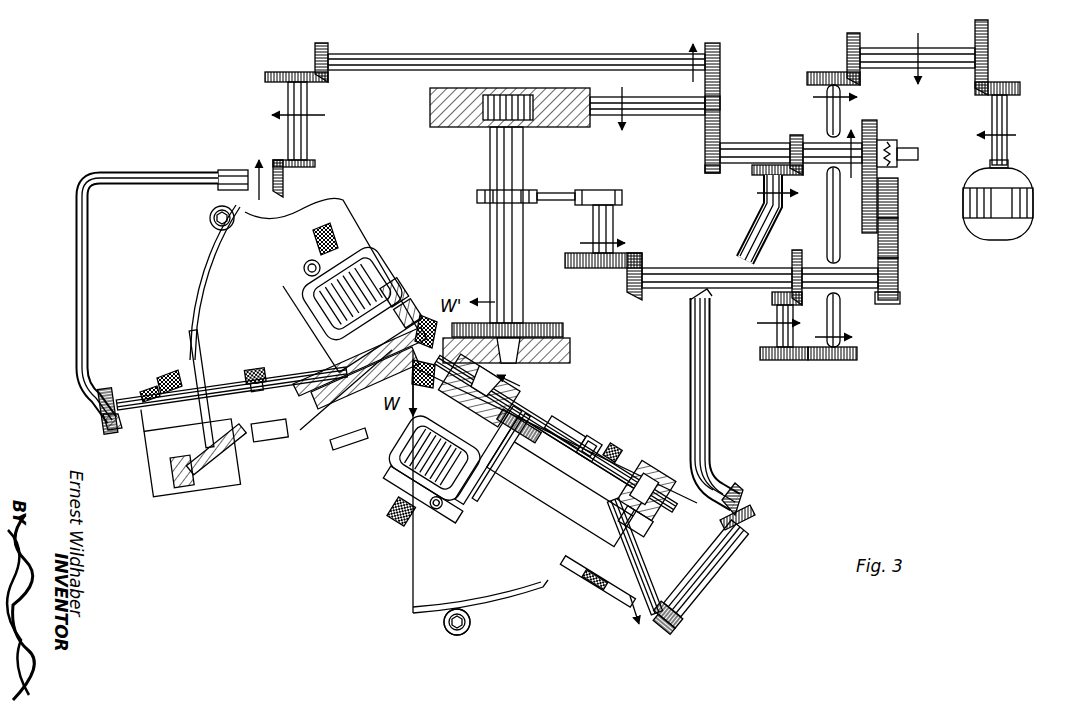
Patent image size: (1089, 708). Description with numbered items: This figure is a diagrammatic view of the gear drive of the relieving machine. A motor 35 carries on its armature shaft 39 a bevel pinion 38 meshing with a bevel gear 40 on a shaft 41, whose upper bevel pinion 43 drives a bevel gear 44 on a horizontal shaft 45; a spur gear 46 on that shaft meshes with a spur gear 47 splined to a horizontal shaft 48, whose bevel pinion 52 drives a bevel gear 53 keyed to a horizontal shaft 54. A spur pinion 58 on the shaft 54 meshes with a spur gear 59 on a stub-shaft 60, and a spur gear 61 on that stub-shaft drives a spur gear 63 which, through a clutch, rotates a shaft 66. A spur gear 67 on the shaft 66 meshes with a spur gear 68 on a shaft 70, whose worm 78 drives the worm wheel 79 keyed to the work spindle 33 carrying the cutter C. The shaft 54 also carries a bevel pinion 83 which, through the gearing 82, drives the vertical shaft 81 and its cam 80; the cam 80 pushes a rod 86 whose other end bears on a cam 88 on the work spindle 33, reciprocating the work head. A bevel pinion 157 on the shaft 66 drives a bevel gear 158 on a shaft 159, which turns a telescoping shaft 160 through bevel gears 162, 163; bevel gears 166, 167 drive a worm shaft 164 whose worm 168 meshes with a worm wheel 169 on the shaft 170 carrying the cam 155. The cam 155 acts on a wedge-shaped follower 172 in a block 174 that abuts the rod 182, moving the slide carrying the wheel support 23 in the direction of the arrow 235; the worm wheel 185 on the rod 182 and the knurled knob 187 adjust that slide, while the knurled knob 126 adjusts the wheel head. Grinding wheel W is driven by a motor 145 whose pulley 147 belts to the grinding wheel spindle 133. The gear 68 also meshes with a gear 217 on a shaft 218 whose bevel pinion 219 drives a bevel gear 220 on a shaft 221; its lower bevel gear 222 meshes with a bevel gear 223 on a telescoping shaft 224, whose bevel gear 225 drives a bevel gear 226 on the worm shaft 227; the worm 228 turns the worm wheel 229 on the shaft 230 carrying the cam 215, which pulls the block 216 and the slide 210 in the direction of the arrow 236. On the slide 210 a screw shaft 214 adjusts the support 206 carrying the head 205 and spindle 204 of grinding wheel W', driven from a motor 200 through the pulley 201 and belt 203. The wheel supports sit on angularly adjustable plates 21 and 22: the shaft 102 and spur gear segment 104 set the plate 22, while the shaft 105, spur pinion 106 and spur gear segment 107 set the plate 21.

The plate 21 is at (413, 570).
The plate 22 is at (350, 204).
The wheel support 23 is at (390, 476).
The work spindle 33 is at (490, 232).
The motor 35 is at (1033, 208).
The bevel pinion 38 is at (1012, 84).
The armature shaft 39 is at (1007, 120).
The bevel gear 40 is at (992, 32).
The shaft 41 is at (897, 52).
The bevel pinion 43 is at (847, 38).
The bevel gear 44 is at (808, 76).
The horizontal shaft 45 is at (827, 212).
The spur gear 46 is at (845, 360).
The spur gear 47 is at (782, 360).
The horizontal shaft 48 is at (777, 330).
The bevel pinion 52 is at (772, 300).
The bevel gear 53 is at (796, 256).
The horizontal shaft 54 is at (670, 268).
The spur pinion 58 is at (900, 304).
The spur gear 59 is at (898, 246).
The stub-shaft 60 is at (898, 222).
The spur gear 61 is at (898, 196).
The spur gear 63 is at (876, 132).
The shaft 66 is at (746, 143).
The spur gear 67 is at (705, 173).
The spur gear 68 is at (720, 105).
The shaft 70 is at (660, 114).
The worm 78 is at (495, 122).
The worm wheel 79 is at (430, 108).
The cam 80 is at (613, 191).
The vertical shaft 81 is at (613, 215).
The gearing 82 is at (575, 267).
The bevel pinion 83 is at (633, 296).
The rod 86 is at (548, 193).
The cam 88 is at (477, 196).
The shaft 102 is at (210, 219).
The spur gear segment 104 is at (195, 290).
The shaft 105 is at (446, 634).
The spur pinion 106 is at (470, 632).
The spur gear segment 107 is at (548, 592).
The knurled knob 126 is at (390, 514).
The grinding wheel spindle 133 is at (522, 388).
The motor 145 is at (438, 512).
The pulley 147 is at (478, 487).
The cam 155 is at (635, 470).
The bevel pinion 157 is at (805, 138).
The bevel gear 158 is at (754, 172).
The shaft 159 is at (711, 394).
The telescoping shaft 160 is at (706, 600).
The bevel gear 162 is at (748, 490).
The bevel gear 163 is at (752, 518).
The worm shaft 164 is at (646, 598).
The bevel gear 166 is at (682, 634).
The bevel gear 167 is at (655, 624).
The worm 168 is at (591, 592).
The worm wheel 169 is at (560, 564).
The shaft 170 is at (584, 532).
The wedge-shaped follower 172 is at (617, 458).
The block 174 is at (652, 528).
The bar or rod 182 is at (590, 415).
The worm wheel 185 is at (593, 436).
The knurled knob 187 is at (545, 520).
The motor 200 is at (369, 264).
The pulley 201 is at (304, 274).
The belt 203 is at (310, 264).
The spindle 204 is at (334, 420).
The head 205 is at (418, 310).
The support 206 is at (396, 284).
The slide 210 is at (308, 355).
The screw shaft 214 is at (262, 448).
The cam 215 is at (211, 486).
The block 216 is at (258, 468).
The gear 217 is at (721, 52).
The shaft 218 is at (580, 55).
The bevel pinion 219 is at (322, 44).
The bevel gear 220 is at (266, 72).
The shaft 221 is at (308, 124).
The bevel gear 222 is at (314, 166).
The bevel gear 223 is at (283, 184).
The telescoping shaft 224 is at (175, 160).
The bevel gear 225 is at (102, 418).
The bevel gear 226 is at (128, 380).
The worm shaft 227 is at (155, 388).
The worm 228 is at (195, 362).
The worm wheel 229 is at (198, 370).
The shaft 230 is at (245, 395).
The arrow 235 is at (522, 374).
The arrow 236 is at (328, 447).
The cutter C is at (576, 348).